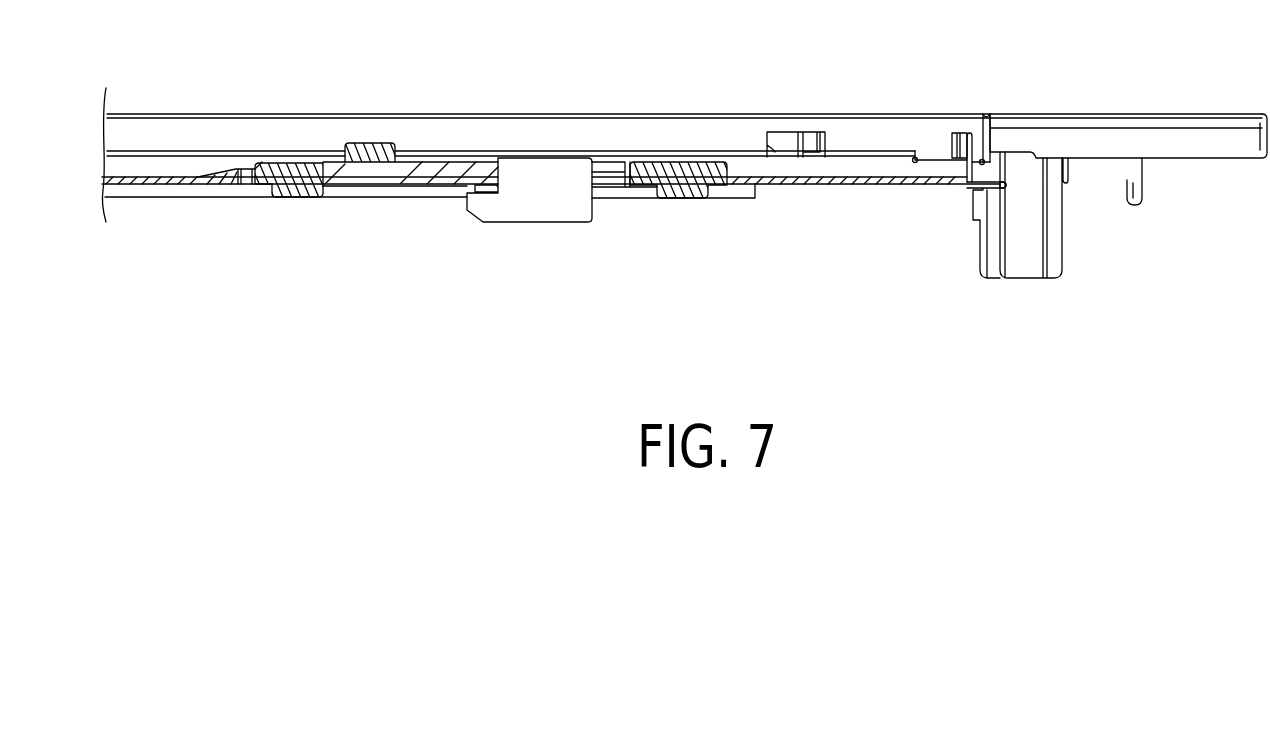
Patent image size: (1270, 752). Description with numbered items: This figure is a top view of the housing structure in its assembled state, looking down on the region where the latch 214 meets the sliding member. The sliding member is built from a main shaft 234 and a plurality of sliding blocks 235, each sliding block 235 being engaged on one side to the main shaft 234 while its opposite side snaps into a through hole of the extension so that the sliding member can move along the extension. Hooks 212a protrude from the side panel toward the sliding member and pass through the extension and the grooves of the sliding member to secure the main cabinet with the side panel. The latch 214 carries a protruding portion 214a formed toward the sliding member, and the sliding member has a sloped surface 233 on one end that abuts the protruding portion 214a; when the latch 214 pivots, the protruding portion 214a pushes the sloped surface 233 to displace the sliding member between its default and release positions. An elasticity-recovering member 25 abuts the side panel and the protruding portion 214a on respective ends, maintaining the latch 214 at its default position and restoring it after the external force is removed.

The sliding block 235 is at (300, 198).
The hook 212a is at (493, 208).
The main shaft 234 is at (765, 182).
The elasticity-recovering member 25 is at (970, 147).
The latch 214 is at (1213, 122).
The protruding portion 214a is at (1022, 257).
The sloped surface 233 is at (983, 256).